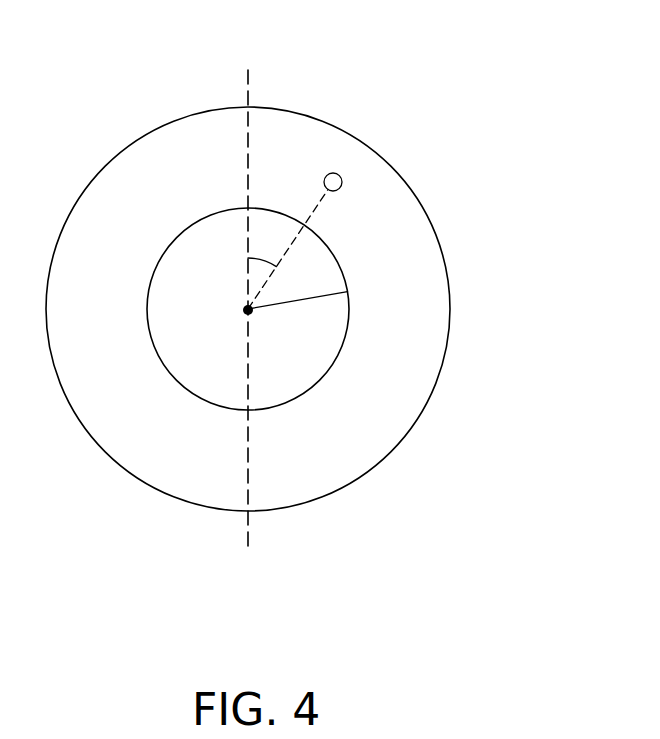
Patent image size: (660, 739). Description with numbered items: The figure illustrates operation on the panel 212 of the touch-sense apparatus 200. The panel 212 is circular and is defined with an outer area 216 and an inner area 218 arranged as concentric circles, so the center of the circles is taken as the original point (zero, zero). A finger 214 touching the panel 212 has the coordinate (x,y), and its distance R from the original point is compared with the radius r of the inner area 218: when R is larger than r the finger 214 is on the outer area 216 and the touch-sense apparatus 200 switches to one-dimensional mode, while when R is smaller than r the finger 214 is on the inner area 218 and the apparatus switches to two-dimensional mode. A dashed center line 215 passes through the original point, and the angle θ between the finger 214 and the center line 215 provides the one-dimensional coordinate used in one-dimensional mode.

The touch-sense apparatus 200 is at (513, 105).
The panel 212 is at (375, 145).
The finger 214 is at (331, 173).
The center line 215 is at (246, 73).
The outer area 216 is at (403, 355).
The inner area 218 is at (300, 373).